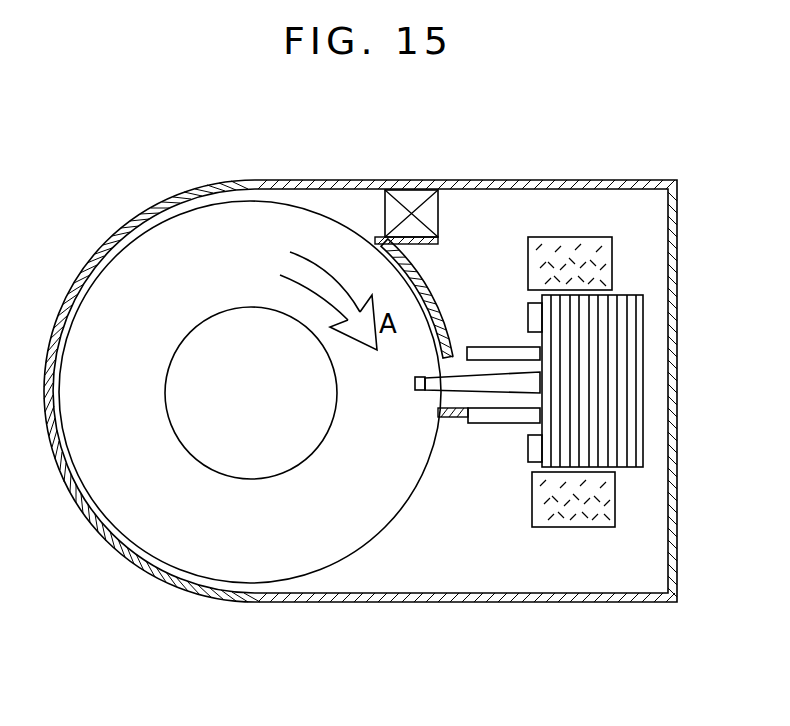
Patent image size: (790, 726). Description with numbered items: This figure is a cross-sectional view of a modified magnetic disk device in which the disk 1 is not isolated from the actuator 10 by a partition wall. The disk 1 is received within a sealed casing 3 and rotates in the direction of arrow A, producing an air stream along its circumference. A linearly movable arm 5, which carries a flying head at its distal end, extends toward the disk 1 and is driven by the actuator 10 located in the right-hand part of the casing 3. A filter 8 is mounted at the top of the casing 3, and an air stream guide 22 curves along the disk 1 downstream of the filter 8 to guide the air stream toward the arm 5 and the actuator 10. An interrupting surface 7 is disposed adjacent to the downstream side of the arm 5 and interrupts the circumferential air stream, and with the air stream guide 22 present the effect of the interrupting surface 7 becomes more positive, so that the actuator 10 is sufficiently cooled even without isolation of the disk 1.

The disk 1 is at (140, 257).
The casing 3 is at (178, 197).
The arm 5 is at (493, 377).
The interrupting surface 7 is at (452, 410).
The filter 8 is at (412, 197).
The actuator 10 is at (613, 260).
The air stream guide 22 is at (448, 300).